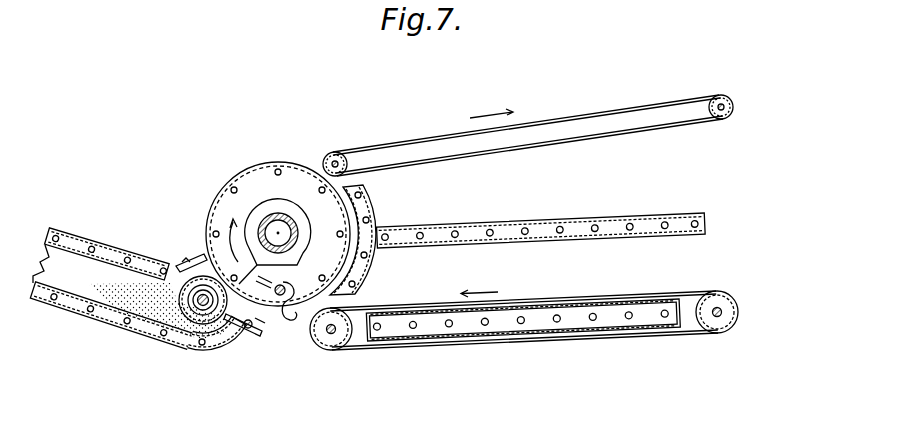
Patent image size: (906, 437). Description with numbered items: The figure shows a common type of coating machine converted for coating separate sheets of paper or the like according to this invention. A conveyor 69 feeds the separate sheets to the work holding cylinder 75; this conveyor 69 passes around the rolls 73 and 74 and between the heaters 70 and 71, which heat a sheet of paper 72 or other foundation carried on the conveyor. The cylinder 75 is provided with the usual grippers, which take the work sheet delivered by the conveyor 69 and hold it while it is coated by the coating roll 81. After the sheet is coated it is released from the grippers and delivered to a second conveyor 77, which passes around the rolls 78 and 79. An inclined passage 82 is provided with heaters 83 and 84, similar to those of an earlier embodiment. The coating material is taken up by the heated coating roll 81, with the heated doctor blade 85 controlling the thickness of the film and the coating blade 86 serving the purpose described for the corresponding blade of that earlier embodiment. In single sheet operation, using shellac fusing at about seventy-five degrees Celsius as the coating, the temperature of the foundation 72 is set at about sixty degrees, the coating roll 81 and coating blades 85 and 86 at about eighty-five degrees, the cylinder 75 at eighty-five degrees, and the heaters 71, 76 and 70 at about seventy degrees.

The conveyor 69 is at (683, 292).
The heater 70 is at (517, 332).
The heater 71 is at (555, 226).
The sheet of paper 72 is at (305, 343).
The roll 73 is at (338, 345).
The roll 74 is at (722, 326).
The work holding cylinder 75 is at (265, 177).
The heater 76 is at (365, 205).
The conveyor 77 is at (574, 113).
The roll 78 is at (340, 158).
The roll 79 is at (734, 108).
The coating roll 81 is at (174, 325).
The inclined passage 82 is at (128, 318).
The heater 83 is at (85, 315).
The heater 84 is at (75, 248).
The doctor blade 85 is at (232, 332).
The coating blade 86 is at (192, 258).